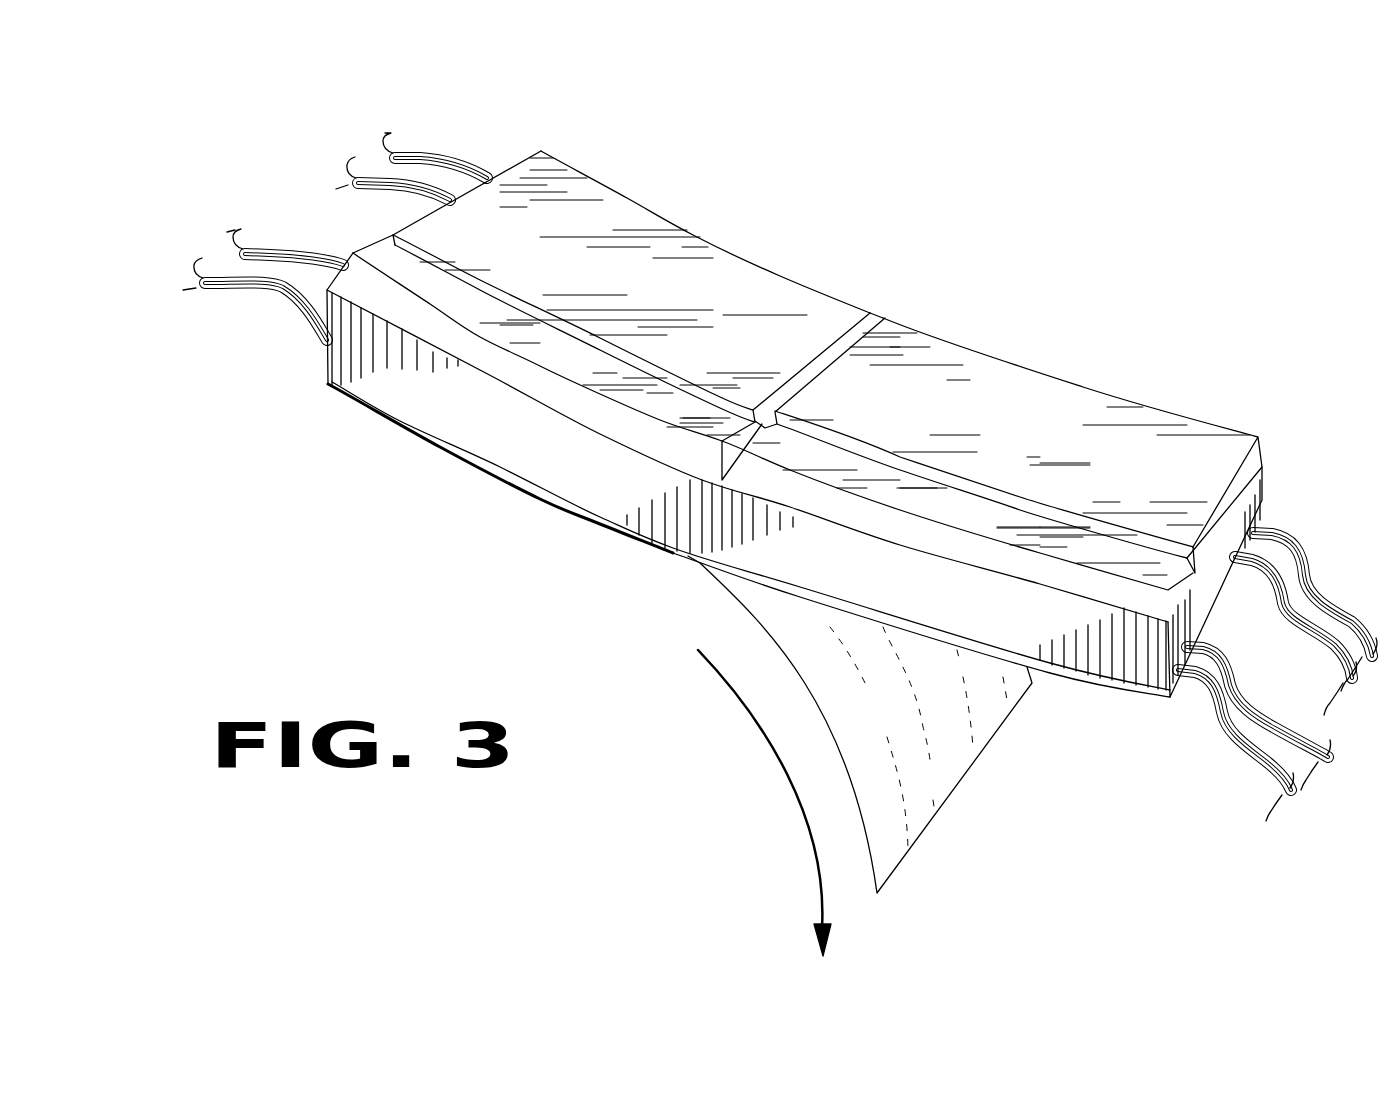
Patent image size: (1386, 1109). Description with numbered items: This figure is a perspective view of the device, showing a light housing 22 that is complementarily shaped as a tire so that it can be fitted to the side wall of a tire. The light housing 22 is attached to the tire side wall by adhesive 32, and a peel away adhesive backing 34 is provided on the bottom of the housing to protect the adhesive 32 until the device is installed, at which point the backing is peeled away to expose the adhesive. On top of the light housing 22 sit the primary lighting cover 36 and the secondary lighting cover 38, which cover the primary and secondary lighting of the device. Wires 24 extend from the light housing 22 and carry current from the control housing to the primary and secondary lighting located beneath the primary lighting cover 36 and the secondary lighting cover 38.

The light housing 22 is at (327, 363).
The wires 24 is at (273, 290).
The adhesive 32 is at (1030, 680).
The peel away adhesive backing 34 is at (700, 575).
The primary lighting cover 36 is at (957, 345).
The secondary lighting cover 38 is at (357, 262).